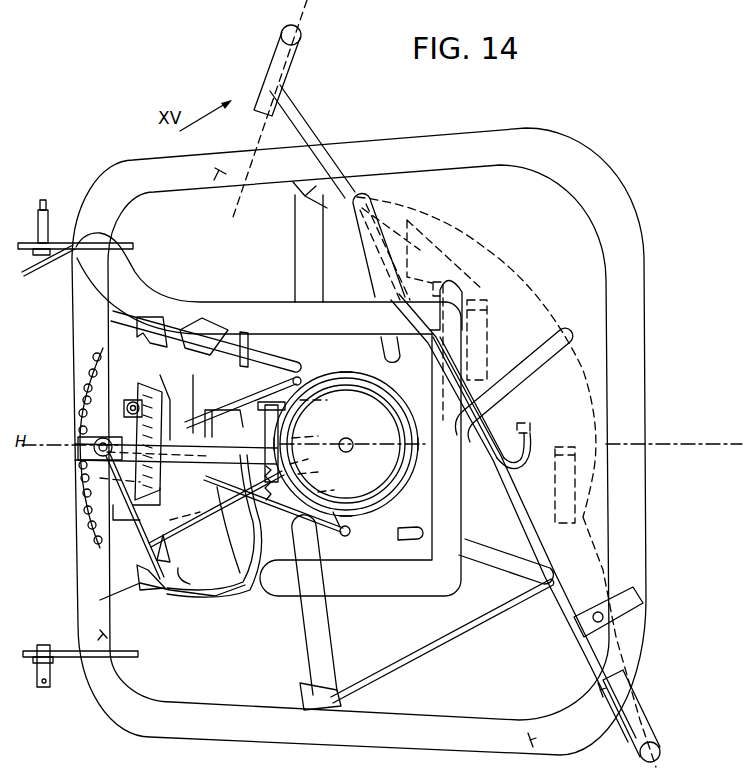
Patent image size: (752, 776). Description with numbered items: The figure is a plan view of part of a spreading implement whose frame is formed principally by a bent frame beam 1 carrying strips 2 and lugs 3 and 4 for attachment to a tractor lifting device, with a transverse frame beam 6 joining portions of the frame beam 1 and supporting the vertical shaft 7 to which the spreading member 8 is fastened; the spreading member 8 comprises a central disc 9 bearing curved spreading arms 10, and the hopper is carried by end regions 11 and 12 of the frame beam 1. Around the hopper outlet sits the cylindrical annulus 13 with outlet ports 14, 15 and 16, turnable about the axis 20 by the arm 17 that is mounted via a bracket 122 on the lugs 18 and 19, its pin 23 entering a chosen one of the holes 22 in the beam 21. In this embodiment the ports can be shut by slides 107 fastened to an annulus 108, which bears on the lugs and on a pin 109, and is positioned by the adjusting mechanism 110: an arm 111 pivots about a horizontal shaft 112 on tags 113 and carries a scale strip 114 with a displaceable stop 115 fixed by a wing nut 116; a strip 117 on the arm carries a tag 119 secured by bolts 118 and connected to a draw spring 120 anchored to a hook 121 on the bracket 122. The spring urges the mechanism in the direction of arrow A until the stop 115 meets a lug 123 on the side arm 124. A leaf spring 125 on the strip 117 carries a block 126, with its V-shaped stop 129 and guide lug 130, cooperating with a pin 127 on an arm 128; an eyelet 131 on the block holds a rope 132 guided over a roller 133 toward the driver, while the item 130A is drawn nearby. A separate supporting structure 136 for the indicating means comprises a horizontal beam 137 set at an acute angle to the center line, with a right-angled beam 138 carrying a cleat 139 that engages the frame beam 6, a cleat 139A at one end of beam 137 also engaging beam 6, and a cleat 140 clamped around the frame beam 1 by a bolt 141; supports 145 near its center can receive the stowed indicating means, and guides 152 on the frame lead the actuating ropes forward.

The bent frame beam 1 is at (503, 138).
The strips 2 is at (135, 580).
The lug 3 is at (27, 243).
The lug 4 is at (28, 650).
The transverse frame beam 6 is at (292, 250).
The vertical shaft 7 is at (355, 457).
The spreading member 8 is at (349, 270).
The central disc 9 is at (474, 463).
The curved spreading arms 10 is at (538, 350).
The end region of the frame beam 11 is at (255, 302).
The end region of the frame beam 12 is at (408, 590).
The cylindrical annulus 13 is at (386, 458).
The outlet port 14 is at (325, 401).
The outlet port 15 is at (315, 438).
The outlet port 16 is at (337, 492).
The arm 17 is at (193, 404).
The radially projecting lug 18 is at (302, 376).
The radially projecting lug 19 is at (352, 520).
The axis 20 is at (350, 440).
The frame beam 21 is at (72, 335).
The holes 22 is at (108, 385).
The pin 23 is at (80, 447).
The slides 107 is at (275, 414).
The annulus 108 is at (353, 377).
The pin 109 is at (403, 440).
The adjusting mechanism 110 is at (194, 472).
The arm 111 is at (178, 407).
The horizontal shaft 112 is at (267, 422).
The tags 113 is at (302, 474).
The strip 114 is at (140, 398).
The displaceable stop 115 is at (138, 380).
The wing nut 116 is at (135, 345).
The strip 117 is at (240, 458).
The bolts 118 is at (217, 407).
The tag 119 is at (210, 500).
The draw spring 120 is at (323, 475).
The hook 121 is at (295, 500).
The bracket 122 is at (332, 535).
The lug 123 is at (95, 413).
The side arm 124 is at (200, 345).
The leaf spring 125 is at (240, 578).
The block 126 is at (188, 575).
The pin 127 is at (75, 478).
The arm 128 is at (143, 515).
The V-shaped stop 129 is at (194, 523).
The guide lug 130 is at (188, 548).
The pedal 130A is at (157, 587).
The eyelet 131 is at (45, 270).
The rope 132 is at (97, 427).
The roller 133 is at (276, 51).
The supporting structure 136 is at (569, 570).
The beam 137 is at (303, 137).
The beam 138 is at (474, 620).
The cleat 139 is at (303, 690).
The cleat 139A is at (290, 205).
The cleat 140 is at (630, 603).
The bolt 141 is at (596, 610).
The supports 145 is at (445, 290).
The guides 152 is at (220, 178).
The arrow A is at (200, 418).